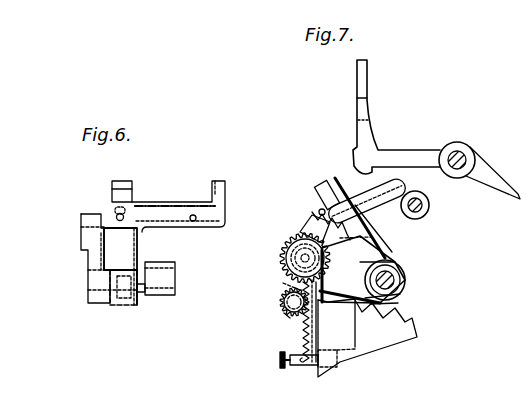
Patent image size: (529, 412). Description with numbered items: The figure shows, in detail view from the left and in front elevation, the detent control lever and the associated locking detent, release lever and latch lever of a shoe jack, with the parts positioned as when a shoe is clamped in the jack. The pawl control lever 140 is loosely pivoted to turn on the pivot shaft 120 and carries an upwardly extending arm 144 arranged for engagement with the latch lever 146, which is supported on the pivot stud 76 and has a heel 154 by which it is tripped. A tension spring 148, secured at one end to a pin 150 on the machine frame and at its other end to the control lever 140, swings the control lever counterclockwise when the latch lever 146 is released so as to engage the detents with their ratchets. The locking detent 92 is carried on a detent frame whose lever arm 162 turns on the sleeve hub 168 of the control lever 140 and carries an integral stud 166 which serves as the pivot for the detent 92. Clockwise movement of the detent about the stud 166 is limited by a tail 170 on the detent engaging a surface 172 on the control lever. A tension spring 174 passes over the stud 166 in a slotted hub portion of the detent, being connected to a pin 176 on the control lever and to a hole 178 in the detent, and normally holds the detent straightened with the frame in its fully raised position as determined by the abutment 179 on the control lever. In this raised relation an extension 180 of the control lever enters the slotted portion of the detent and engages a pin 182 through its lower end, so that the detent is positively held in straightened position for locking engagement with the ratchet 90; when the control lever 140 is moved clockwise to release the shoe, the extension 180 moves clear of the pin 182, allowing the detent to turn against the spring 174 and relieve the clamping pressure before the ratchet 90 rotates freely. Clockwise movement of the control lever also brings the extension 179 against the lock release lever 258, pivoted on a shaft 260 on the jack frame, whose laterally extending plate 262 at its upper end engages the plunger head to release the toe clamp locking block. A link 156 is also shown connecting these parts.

In FIG. 7, the pivot stud 76 is at (455, 149).
In FIG. 7, the ratchet 90 is at (413, 337).
In FIG. 7, the locking detent 92 is at (302, 322).
In FIG. 7, the pivot shaft 120 is at (403, 282).
In FIG. 6, the pawl control lever 140 is at (130, 247).
In FIG. 7, the pawl control lever 140 is at (372, 248).
In FIG. 6, the upwardly extending arm 144 is at (117, 186).
In FIG. 7, the upwardly extending arm 144 is at (333, 188).
In FIG. 7, the latch lever 146 is at (427, 128).
In FIG. 7, the tension spring 148 is at (282, 300).
In FIG. 7, the pin 150 is at (280, 362).
In FIG. 7, the heel 154 is at (484, 165).
In FIG. 6, the link bar 156 is at (214, 186).
In FIG. 7, the link bar 156 is at (421, 191).
In FIG. 7, the lever arm 162 is at (283, 262).
In FIG. 7, the stud 166 is at (288, 250).
In FIG. 6, the sleeve hub 168 is at (160, 296).
In FIG. 7, the sleeve hub 168 is at (401, 294).
In FIG. 7, the tail 170 is at (376, 236).
In FIG. 6, the surface 172 is at (115, 250).
In FIG. 7, the surface 172 is at (395, 262).
In FIG. 7, the tension spring 174 is at (291, 238).
In FIG. 6, the pin 176 is at (116, 214).
In FIG. 7, the pin 176 is at (318, 210).
In FIG. 7, the hole 178 is at (283, 283).
In FIG. 6, the abutment 179 is at (85, 219).
In FIG. 7, the abutment 179 is at (306, 222).
In FIG. 6, the extension 180 is at (125, 303).
In FIG. 7, the extension 180 is at (399, 303).
In FIG. 7, the pin 182 is at (285, 314).
In FIG. 7, the lock release lever 258 is at (359, 124).
In FIG. 7, the shaft 260 is at (429, 207).
In FIG. 7, the laterally extending plate 262 is at (357, 82).